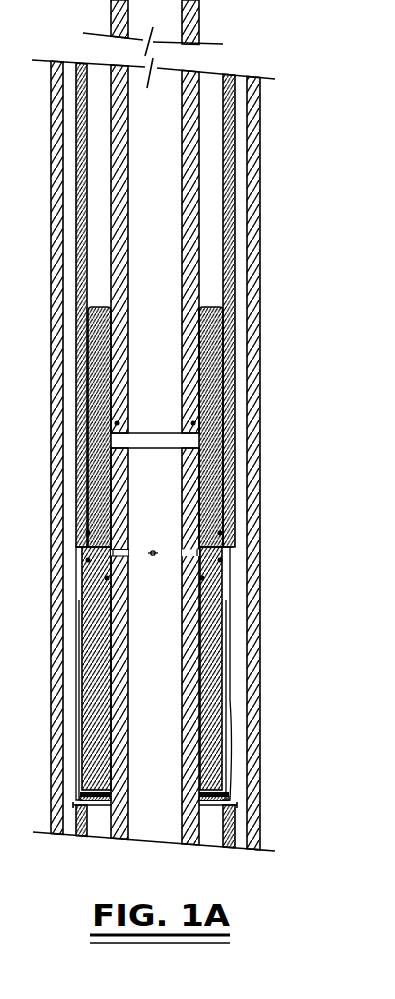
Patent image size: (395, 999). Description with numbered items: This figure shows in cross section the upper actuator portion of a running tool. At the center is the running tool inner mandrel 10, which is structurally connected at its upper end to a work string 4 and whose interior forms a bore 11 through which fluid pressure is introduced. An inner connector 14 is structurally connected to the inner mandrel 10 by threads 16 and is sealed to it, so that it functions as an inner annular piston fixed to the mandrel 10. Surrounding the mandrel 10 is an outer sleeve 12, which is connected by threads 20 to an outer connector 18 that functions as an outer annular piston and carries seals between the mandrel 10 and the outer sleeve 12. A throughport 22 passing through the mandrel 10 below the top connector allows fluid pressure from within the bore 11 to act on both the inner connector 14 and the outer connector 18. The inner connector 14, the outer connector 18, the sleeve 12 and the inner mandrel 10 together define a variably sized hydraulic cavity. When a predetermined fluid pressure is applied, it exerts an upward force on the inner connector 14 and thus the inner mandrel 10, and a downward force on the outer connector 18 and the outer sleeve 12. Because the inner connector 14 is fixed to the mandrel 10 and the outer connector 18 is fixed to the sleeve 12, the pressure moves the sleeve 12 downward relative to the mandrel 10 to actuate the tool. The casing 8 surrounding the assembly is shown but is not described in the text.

The work string 4 is at (199, 7).
The casing 8 is at (260, 353).
The inner mandrel 10 is at (197, 215).
The bore 11 is at (163, 162).
The outer sleeve 12 is at (233, 292).
The inner connector 14 is at (217, 412).
The threads 16 is at (200, 480).
The outer connector 18 is at (210, 663).
The threads 20 is at (229, 743).
The throughport 22 is at (188, 560).